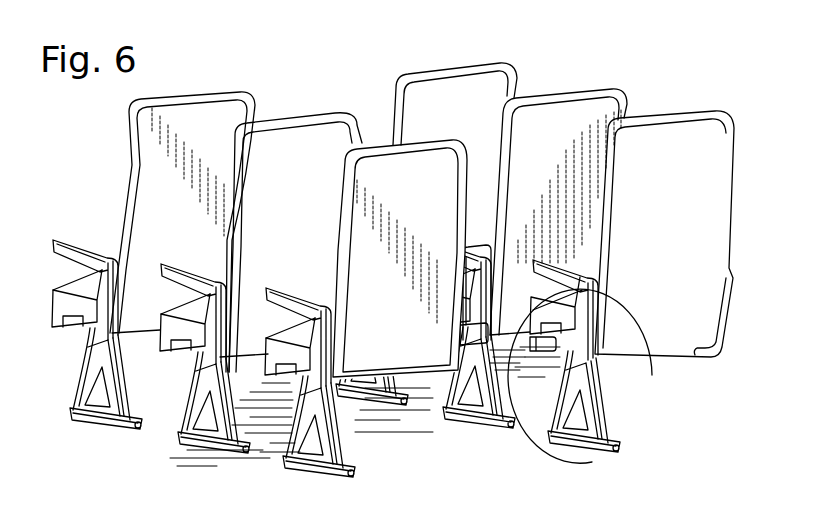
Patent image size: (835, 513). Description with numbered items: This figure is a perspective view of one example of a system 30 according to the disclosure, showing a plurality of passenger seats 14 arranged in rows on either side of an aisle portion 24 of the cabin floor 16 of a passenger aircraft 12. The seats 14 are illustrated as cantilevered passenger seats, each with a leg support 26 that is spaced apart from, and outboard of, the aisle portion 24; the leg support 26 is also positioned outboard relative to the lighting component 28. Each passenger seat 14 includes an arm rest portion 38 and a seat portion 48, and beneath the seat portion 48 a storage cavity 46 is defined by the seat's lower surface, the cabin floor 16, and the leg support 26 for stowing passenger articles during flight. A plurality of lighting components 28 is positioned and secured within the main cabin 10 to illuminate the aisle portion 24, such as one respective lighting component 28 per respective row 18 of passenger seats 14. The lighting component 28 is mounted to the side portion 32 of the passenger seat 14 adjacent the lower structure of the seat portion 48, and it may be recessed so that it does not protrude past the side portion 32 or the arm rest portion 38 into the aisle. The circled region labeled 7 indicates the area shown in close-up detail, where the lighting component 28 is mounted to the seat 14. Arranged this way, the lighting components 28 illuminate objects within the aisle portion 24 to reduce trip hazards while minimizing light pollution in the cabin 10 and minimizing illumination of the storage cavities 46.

The detail view circle (FIG. 7) 7 is at (652, 384).
The passenger cabin 10 is at (680, 103).
The passenger aircraft 12 is at (665, 208).
The passenger seat 14 is at (173, 137).
The cabin floor 16 is at (426, 451).
The row 18 is at (399, 316).
The aisle portion 24 is at (455, 418).
The leg support 26 is at (86, 360).
The lighting component 28 is at (571, 356).
The system 30 is at (682, 198).
The side portion 32 is at (543, 341).
The arm rest portion 38 is at (83, 247).
The storage cavity 46 is at (133, 393).
The seat portion 48 is at (88, 287).